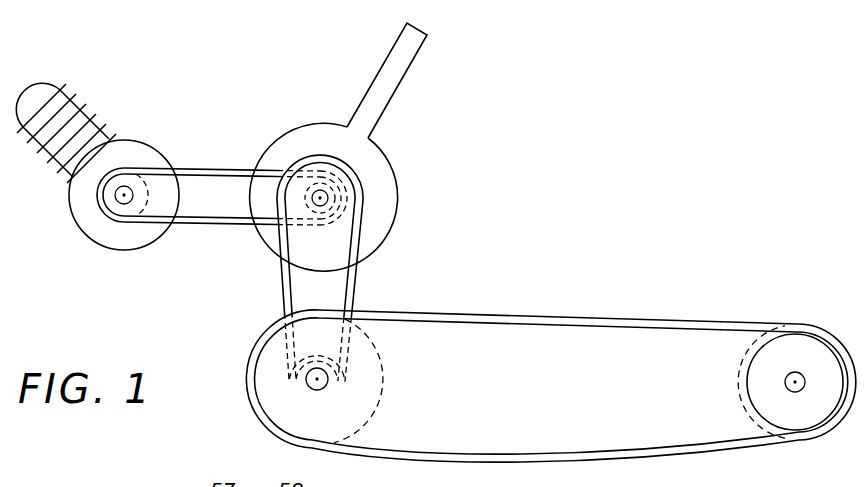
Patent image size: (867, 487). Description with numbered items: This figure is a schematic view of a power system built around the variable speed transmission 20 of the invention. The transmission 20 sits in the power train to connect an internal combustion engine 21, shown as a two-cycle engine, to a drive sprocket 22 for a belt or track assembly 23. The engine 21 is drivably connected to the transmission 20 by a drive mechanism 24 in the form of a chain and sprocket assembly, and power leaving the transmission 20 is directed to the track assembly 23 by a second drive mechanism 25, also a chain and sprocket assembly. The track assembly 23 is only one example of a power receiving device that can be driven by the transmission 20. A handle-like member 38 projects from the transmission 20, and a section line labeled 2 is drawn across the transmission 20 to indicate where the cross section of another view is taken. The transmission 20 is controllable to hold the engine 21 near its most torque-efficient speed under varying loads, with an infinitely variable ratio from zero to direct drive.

The transmission 20 is at (402, 163).
The internal combustion engine 21 is at (145, 157).
The drive sprocket 22 is at (363, 383).
The track assembly 23 is at (628, 322).
The drive mechanism 24 is at (212, 220).
The drive mechanism 25 is at (348, 290).
The handle 38 is at (395, 78).
The section line 2- 2 is at (333, 88).